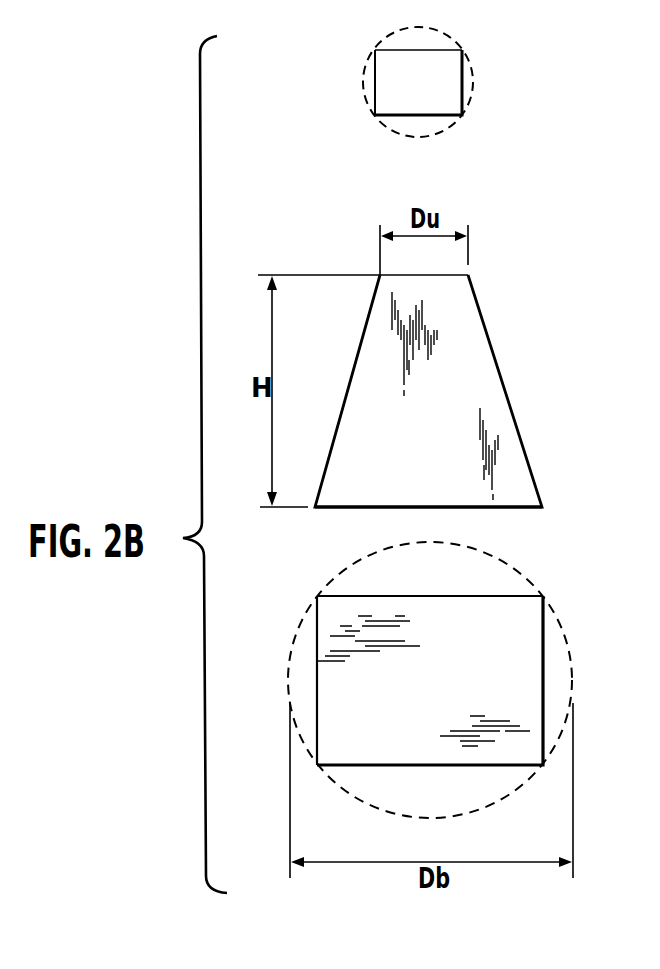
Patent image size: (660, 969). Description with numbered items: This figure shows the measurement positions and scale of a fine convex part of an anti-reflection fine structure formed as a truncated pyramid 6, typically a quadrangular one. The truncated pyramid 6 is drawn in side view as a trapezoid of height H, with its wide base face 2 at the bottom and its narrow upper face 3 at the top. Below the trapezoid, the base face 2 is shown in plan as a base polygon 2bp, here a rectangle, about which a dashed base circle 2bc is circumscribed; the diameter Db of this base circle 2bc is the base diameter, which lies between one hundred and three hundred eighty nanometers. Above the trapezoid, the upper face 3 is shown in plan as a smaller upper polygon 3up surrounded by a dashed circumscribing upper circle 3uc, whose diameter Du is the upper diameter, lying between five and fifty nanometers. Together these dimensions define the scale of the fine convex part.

The base face 2 is at (495, 508).
The base polygon 2bp is at (530, 683).
The base circle 2bc is at (529, 580).
The upper face 3 is at (433, 272).
The upper polygon 3up is at (447, 77).
The upper circle 3uc is at (388, 118).
The truncated pyramid 6 is at (520, 208).